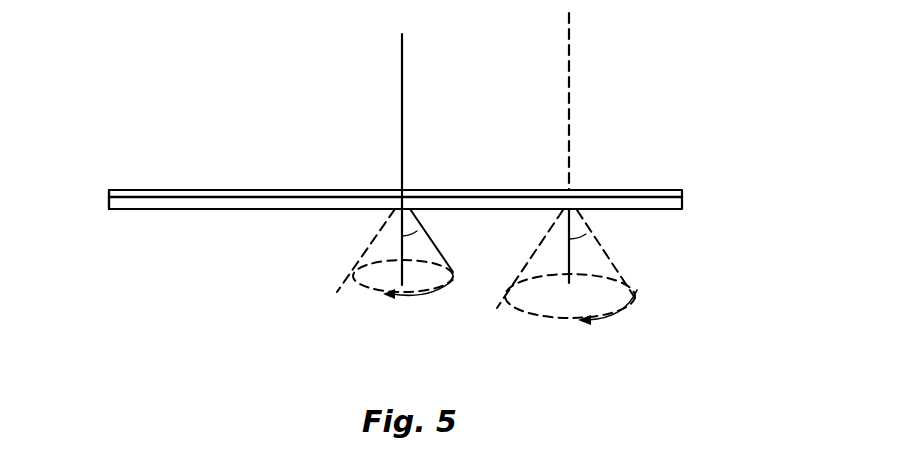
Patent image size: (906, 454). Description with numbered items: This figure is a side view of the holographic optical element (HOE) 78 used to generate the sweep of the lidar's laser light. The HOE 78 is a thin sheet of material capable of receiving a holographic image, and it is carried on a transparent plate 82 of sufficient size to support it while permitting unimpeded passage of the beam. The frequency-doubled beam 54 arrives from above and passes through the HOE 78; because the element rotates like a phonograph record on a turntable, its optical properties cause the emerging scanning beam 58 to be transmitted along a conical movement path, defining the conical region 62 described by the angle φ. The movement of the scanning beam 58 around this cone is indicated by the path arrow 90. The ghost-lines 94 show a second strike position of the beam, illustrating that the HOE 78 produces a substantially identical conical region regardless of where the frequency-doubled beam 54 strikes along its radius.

The frequency-doubled beam 54 is at (403, 115).
The scanning beam 58 is at (443, 250).
The conical region 62 is at (378, 239).
The holographic optical element 78 is at (682, 190).
The transparent plate 82 is at (108, 200).
The path arrow 90 is at (410, 298).
The ghost-lines 94 is at (586, 164).